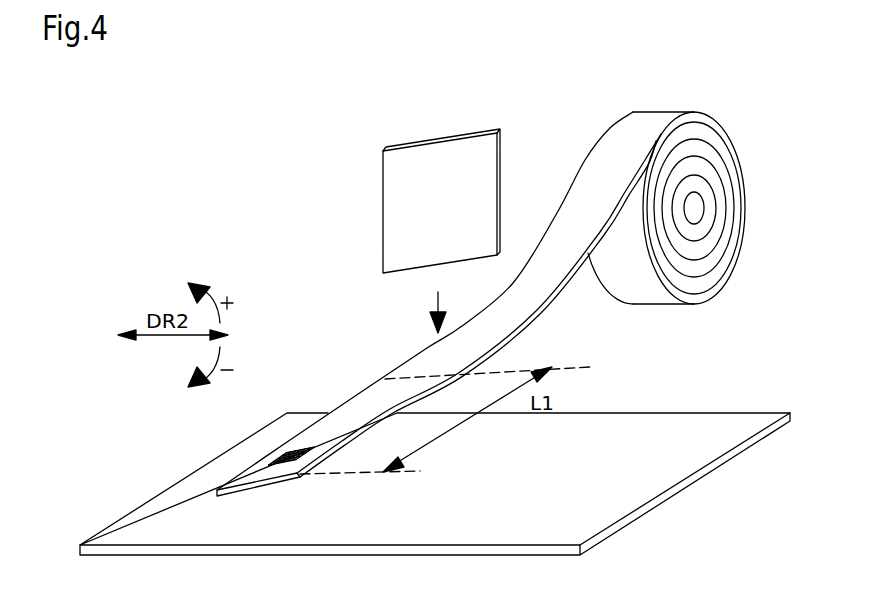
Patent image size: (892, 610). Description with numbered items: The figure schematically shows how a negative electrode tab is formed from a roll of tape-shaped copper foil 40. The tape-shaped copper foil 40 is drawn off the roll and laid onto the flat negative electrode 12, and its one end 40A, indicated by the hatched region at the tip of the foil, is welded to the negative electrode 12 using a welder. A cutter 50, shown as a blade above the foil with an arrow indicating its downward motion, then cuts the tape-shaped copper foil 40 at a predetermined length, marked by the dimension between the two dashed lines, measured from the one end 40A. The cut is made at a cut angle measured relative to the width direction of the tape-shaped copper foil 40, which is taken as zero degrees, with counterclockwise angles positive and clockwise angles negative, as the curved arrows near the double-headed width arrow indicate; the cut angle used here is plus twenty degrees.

The negative electrode 12 is at (728, 458).
The tape-shaped copper foil 40 is at (735, 160).
The one end of the tape-shaped copper foil 40A is at (272, 462).
The cutter 50 is at (391, 218).